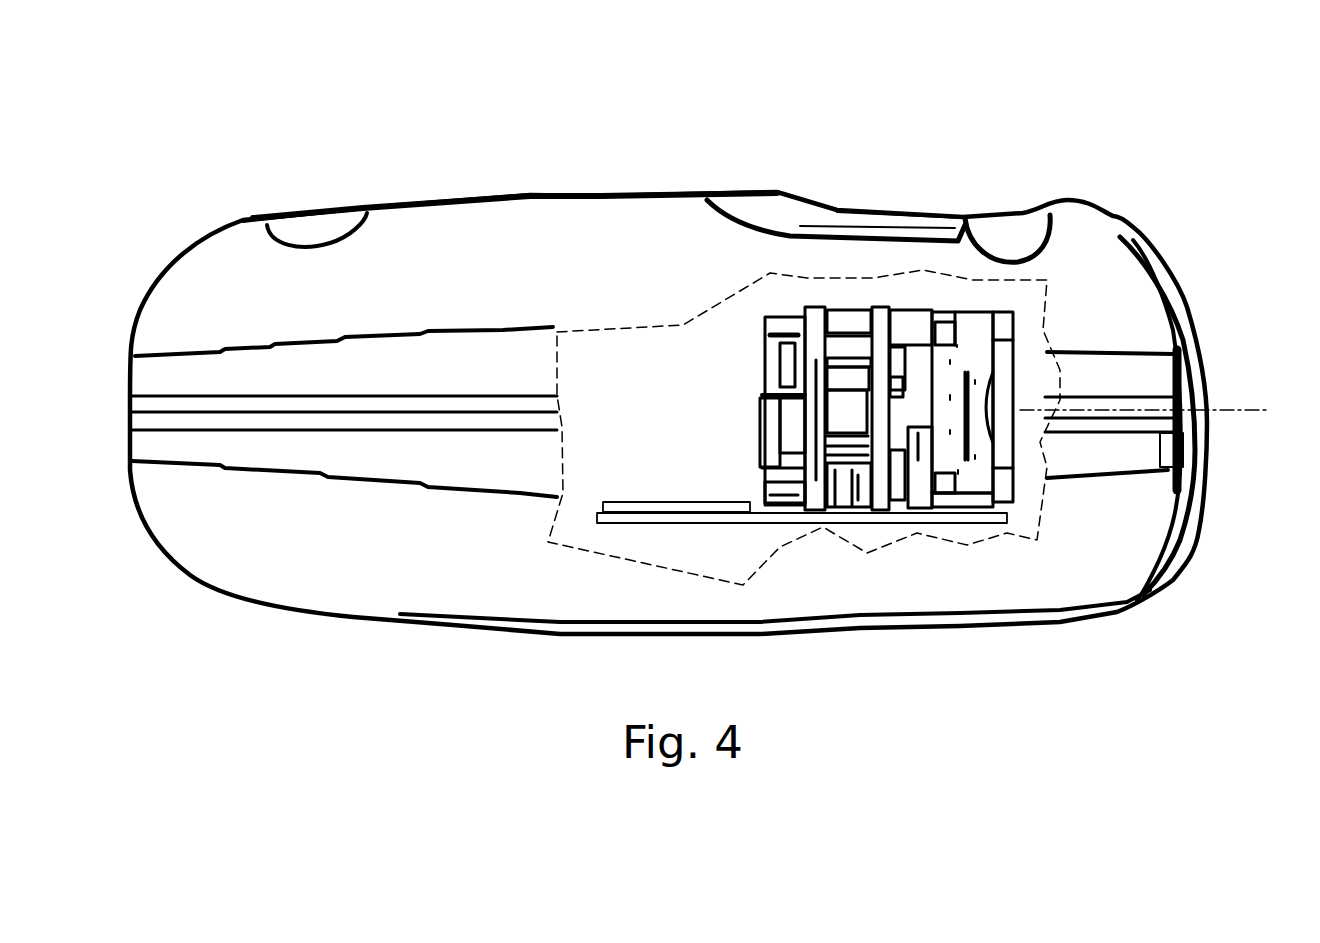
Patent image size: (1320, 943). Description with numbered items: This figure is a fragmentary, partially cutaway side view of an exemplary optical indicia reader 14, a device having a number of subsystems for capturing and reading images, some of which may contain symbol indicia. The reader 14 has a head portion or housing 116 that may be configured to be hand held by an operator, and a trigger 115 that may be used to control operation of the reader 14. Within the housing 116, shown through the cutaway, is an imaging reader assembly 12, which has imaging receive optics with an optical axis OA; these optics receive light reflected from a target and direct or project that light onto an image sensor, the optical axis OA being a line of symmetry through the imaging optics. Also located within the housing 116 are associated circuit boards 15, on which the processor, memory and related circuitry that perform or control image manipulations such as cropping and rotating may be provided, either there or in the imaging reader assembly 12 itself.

The optical indicia reader 14 is at (494, 54).
The housing 116 is at (243, 220).
The trigger 115 is at (835, 210).
The imaging reader assembly 12 is at (736, 343).
The circuit boards 15 is at (665, 502).
The optical axis OA is at (1243, 410).